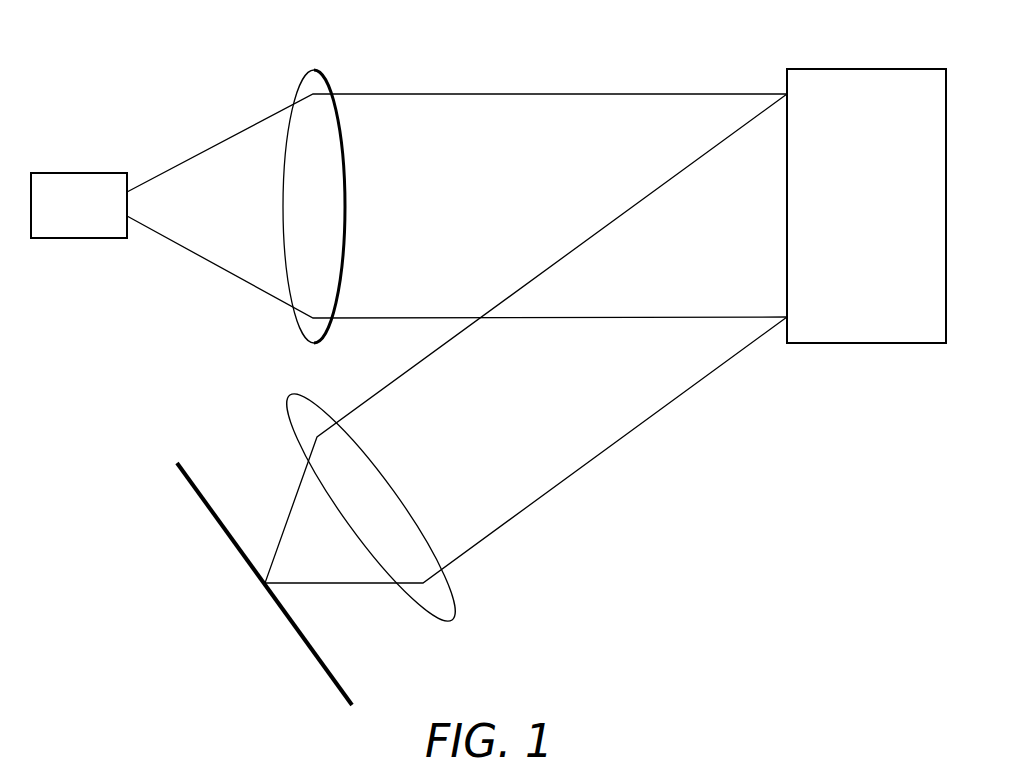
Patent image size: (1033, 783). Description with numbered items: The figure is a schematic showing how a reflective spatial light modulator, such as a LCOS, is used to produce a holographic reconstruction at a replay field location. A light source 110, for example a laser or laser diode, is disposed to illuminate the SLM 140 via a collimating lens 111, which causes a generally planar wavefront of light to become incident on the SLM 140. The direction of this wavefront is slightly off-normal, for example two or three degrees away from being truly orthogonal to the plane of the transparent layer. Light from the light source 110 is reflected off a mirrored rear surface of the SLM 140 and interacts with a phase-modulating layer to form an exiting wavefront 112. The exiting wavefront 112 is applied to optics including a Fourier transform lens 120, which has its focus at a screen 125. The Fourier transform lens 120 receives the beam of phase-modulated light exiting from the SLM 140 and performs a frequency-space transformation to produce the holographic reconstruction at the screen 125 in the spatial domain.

The light source 110 is at (60, 173).
The collimating lens 111 is at (312, 70).
The exiting wavefront 112 is at (638, 425).
The Fourier transform lens 120 is at (452, 620).
The screen 125 is at (190, 488).
The SLM 140 is at (911, 69).